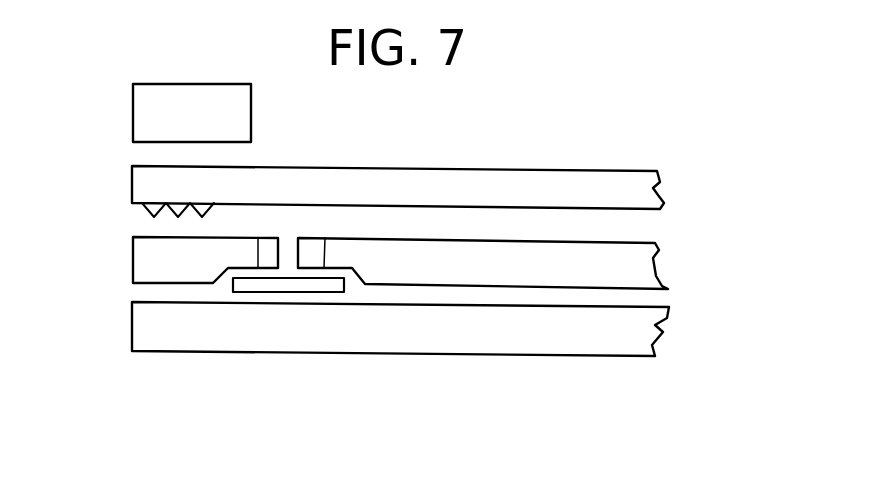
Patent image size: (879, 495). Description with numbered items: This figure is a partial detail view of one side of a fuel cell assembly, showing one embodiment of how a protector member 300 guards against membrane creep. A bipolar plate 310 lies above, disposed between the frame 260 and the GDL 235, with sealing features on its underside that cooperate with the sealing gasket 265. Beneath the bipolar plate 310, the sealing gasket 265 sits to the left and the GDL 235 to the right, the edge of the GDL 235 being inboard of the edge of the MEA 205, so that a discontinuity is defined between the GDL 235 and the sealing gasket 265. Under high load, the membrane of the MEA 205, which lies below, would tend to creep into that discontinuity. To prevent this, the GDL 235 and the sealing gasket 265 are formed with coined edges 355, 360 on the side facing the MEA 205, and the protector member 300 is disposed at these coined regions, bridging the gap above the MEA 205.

The frame 260 is at (204, 127).
The bipolar plate 310 is at (633, 191).
The coined edge 360 is at (258, 238).
The sealing gasket 265 is at (145, 259).
The GDL 235 is at (633, 259).
The coined edge 355 is at (325, 238).
The protector member 300 is at (231, 283).
The MEA 205 is at (633, 330).